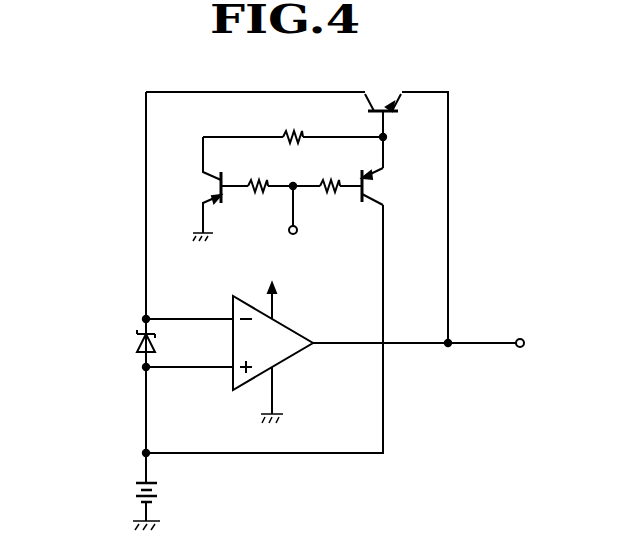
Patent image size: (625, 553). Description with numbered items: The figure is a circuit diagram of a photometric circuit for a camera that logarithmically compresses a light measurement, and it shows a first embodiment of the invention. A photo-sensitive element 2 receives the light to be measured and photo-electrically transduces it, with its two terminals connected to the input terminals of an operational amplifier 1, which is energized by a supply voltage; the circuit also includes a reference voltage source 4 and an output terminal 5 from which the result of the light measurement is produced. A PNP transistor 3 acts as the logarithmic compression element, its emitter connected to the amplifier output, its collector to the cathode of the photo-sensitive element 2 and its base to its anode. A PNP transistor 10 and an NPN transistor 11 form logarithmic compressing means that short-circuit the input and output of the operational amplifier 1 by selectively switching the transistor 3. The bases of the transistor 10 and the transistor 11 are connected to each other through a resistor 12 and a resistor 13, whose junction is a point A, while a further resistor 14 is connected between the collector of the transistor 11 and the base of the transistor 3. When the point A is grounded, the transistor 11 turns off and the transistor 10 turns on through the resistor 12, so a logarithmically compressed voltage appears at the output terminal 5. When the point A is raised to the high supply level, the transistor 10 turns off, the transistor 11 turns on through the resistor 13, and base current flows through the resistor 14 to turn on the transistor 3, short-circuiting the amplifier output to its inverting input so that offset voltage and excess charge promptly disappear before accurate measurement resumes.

The operational amplifier 1 is at (294, 329).
The photo-sensitive element 2 is at (156, 340).
The transistor 3 is at (383, 105).
The reference voltage source 4 is at (158, 490).
The output terminal 5 is at (520, 338).
The PNP transistor 10 is at (375, 183).
The NPN transistor 11 is at (214, 187).
The resistor 12 is at (329, 181).
The resistor 13 is at (260, 181).
The resistor 14 is at (297, 130).
The point A is at (298, 230).